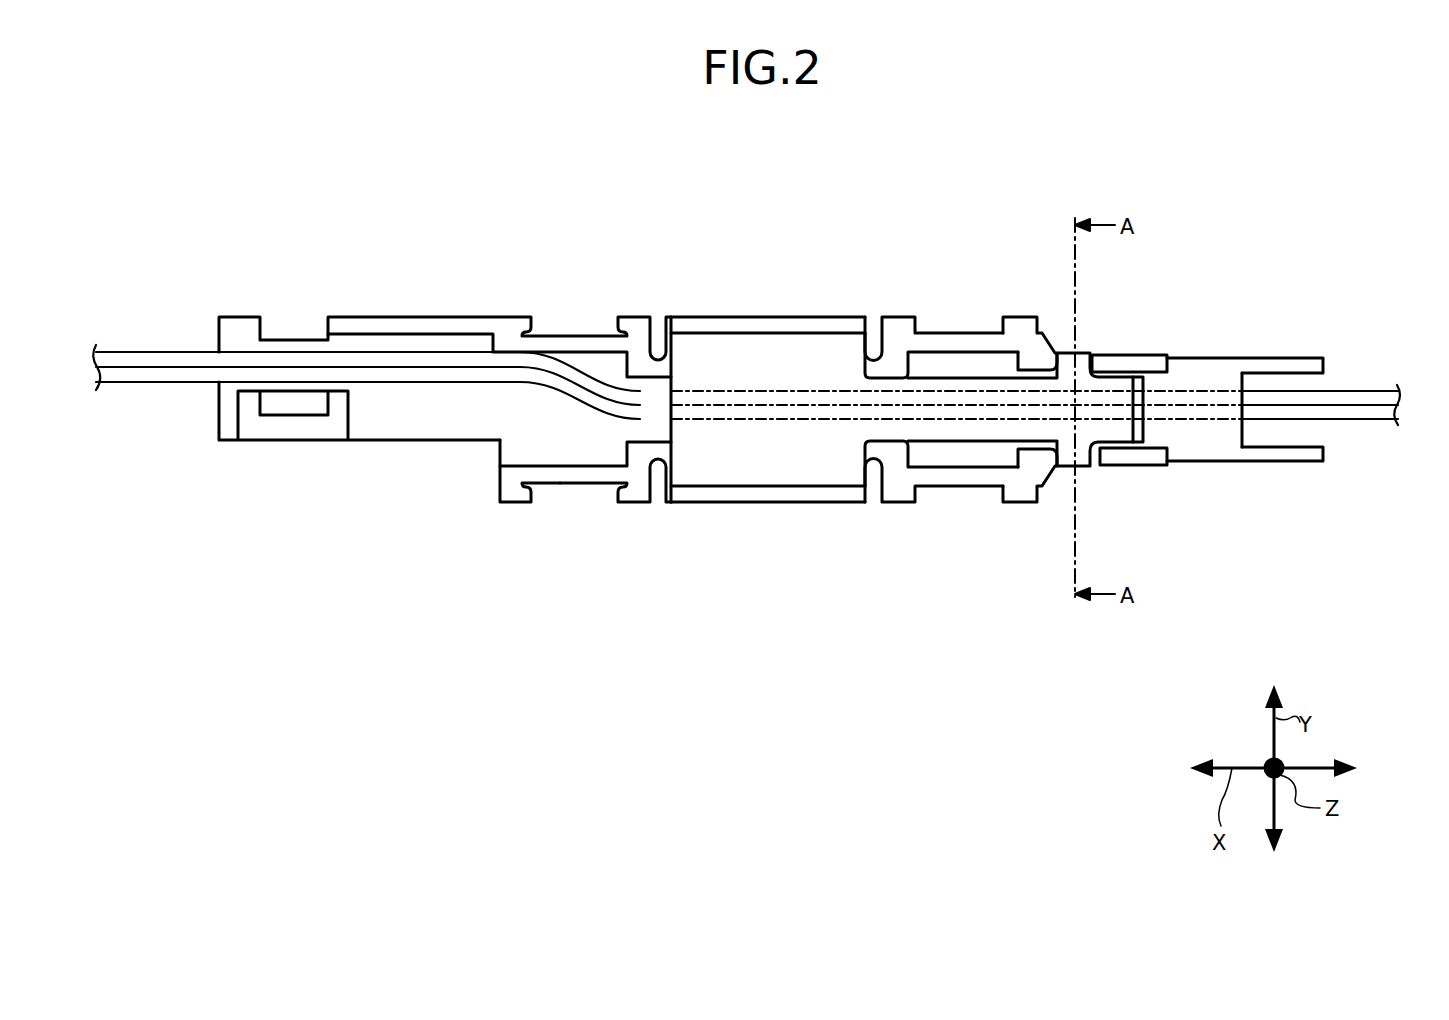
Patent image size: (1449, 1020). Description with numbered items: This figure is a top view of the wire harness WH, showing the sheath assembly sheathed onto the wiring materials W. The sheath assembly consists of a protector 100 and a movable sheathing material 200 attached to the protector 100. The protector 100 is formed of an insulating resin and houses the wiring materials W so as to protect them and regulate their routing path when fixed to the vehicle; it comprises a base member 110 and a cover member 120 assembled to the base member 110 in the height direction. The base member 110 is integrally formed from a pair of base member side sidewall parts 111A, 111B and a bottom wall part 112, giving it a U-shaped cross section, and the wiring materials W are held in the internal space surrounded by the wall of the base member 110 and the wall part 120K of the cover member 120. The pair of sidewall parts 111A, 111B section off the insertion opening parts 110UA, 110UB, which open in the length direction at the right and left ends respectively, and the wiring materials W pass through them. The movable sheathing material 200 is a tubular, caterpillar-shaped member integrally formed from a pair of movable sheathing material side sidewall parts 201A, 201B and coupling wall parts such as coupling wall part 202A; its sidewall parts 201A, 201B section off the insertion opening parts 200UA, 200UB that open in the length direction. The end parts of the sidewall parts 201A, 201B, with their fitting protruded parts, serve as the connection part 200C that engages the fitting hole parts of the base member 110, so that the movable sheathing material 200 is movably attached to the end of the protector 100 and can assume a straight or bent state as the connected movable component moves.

The wire harness WH is at (172, 234).
The wiring materials W is at (150, 352).
The protector 100 is at (388, 196).
The base member 110 is at (375, 316).
The bottom wall part 112 is at (577, 436).
The insertion opening part 110UB is at (500, 456).
The insertion opening part 110UA is at (1183, 463).
The cover member 120 is at (822, 355).
The wall part 120K is at (852, 362).
The base member side sidewall part 111B is at (703, 327).
The base member side sidewall part 111A is at (836, 493).
The movable sheathing material 200 is at (1238, 353).
The coupling wall part 202A is at (1187, 378).
The connection part 200C is at (1123, 363).
The insertion opening part 200UB is at (1100, 457).
The insertion opening part 200UA is at (1323, 449).
The movable sheathing material side sidewall part 201B is at (1311, 357).
The movable sheathing material side sidewall part 201A is at (1280, 469).